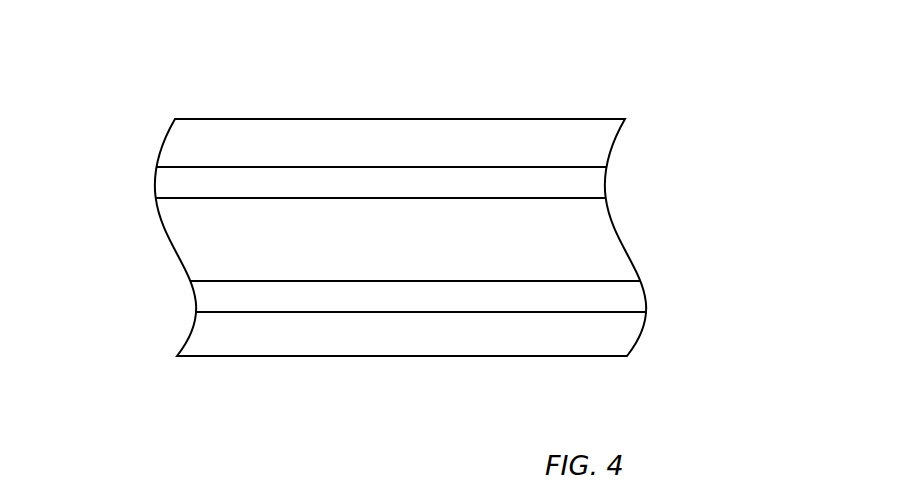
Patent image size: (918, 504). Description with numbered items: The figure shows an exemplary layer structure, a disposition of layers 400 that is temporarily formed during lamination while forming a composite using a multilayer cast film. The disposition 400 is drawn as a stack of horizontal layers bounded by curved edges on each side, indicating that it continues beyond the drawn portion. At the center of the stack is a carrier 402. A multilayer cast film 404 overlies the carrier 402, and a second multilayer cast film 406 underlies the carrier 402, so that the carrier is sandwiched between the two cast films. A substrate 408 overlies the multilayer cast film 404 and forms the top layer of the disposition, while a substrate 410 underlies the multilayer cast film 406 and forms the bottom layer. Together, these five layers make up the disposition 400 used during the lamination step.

The disposition of layers 400 is at (597, 88).
The carrier 402 is at (611, 255).
The multilayer cast film 404 is at (185, 182).
The multilayer cast film 406 is at (210, 297).
The substrate 408 is at (185, 138).
The substrate 410 is at (207, 328).